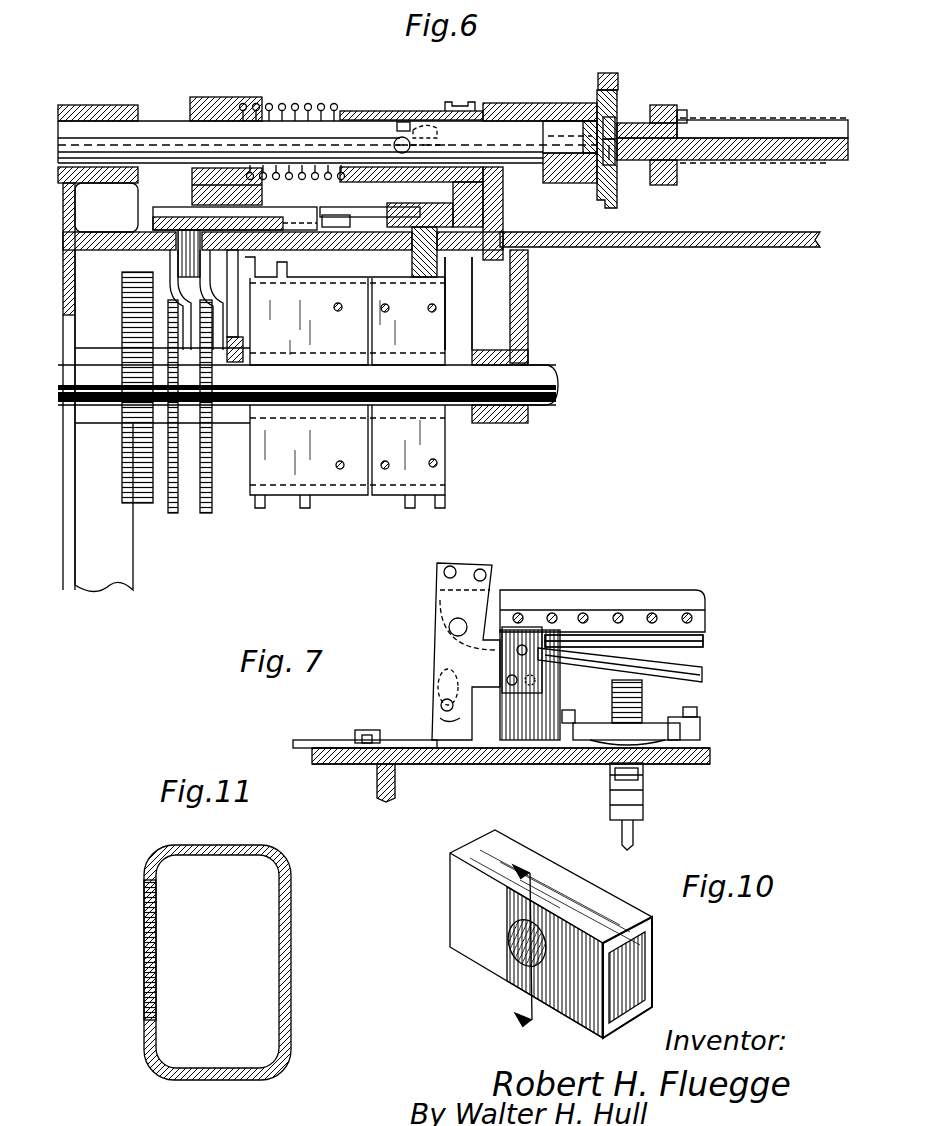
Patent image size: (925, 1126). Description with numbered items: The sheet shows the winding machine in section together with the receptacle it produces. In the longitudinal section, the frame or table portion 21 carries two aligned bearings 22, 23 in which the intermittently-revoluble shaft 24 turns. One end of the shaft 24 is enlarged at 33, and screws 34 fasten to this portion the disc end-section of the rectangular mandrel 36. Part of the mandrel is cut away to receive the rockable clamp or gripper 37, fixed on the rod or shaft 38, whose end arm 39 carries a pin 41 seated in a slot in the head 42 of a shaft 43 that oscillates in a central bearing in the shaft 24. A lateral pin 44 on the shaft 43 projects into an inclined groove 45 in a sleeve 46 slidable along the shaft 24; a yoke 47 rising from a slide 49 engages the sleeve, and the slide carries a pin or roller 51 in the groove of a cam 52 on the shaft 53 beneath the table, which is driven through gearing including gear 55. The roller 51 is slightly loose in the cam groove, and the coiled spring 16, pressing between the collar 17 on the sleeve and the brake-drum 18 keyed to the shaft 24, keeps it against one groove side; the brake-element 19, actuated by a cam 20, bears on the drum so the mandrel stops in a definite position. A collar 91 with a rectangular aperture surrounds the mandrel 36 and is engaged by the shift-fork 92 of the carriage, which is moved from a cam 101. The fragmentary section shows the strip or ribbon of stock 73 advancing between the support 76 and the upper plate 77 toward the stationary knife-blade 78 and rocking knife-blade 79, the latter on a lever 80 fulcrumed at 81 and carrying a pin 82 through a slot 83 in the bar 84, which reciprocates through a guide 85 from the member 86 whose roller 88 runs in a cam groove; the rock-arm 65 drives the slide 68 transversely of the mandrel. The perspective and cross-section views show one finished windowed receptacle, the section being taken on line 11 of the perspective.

In FIG. 6, the bearing 22 is at (107, 105).
In FIG. 6, the shaft 24 is at (160, 130).
In FIG. 6, the brake-drum 18 is at (215, 100).
In FIG. 6, the coiled spring 16 is at (300, 104).
In FIG. 6, the collar 17 is at (355, 111).
In FIG. 6, the lateral pin 44 is at (400, 137).
In FIG. 6, the inclined groove 45 is at (422, 126).
In FIG. 6, the yoke 47 is at (468, 104).
In FIG. 6, the bearing 23 is at (517, 108).
In FIG. 6, the shaft 43 is at (553, 125).
In FIG. 6, the head 42 is at (590, 118).
In FIG. 6, the enlarged portion 33 is at (603, 200).
In FIG. 6, the pin 39 is at (606, 150).
In FIG. 6, the pin 41 is at (607, 165).
In FIG. 6, the screw 34 is at (618, 80).
In FIG. 6, the rod or shaft 38 is at (636, 122).
In FIG. 6, the shift-fork 92 is at (663, 105).
In FIG. 6, the collar 91 is at (682, 116).
In FIG. 6, the clamp or gripper 37 is at (775, 120).
In FIG. 6, the mandrel 36 is at (775, 160).
In FIG. 6, the frame or table portion 21 is at (680, 236).
In FIG. 7, the frame or table portion 21 is at (488, 764).
In FIG. 6, the brake-element 19 is at (215, 168).
In FIG. 6, the reciprocating member 86 is at (172, 212).
In FIG. 6, the bar 84 is at (330, 215).
In FIG. 7, the bar 84 is at (322, 742).
In FIG. 6, the sleeve 46 is at (453, 190).
In FIG. 6, the slide 49 is at (390, 208).
In FIG. 6, the roller 88 is at (170, 260).
In FIG. 6, the cam 101 is at (288, 264).
In FIG. 6, the pin or roller 51 is at (437, 258).
In FIG. 6, the cam 52 is at (446, 284).
In FIG. 6, the cam 20 is at (245, 370).
In FIG. 6, the shaft 53 is at (543, 372).
In FIG. 6, the gear 55 is at (122, 450).
In FIG. 7, the lever 80 is at (466, 651).
In FIG. 7, the fulcrum 81 is at (448, 628).
In FIG. 7, the slot 83 is at (440, 690).
In FIG. 7, the pin 82 is at (441, 708).
In FIG. 7, the guide 85 is at (367, 730).
In FIG. 7, the upper plate 77 is at (565, 612).
In FIG. 7, the stationary knife-blade 78 is at (603, 612).
In FIG. 7, the strip or ribbon of stock 73 is at (632, 636).
In FIG. 7, the support 76 is at (665, 640).
In FIG. 7, the rocking knife-blade 79 is at (702, 665).
In FIG. 7, the slide 68 is at (593, 728).
In FIG. 7, the rock-arm 65 is at (622, 838).
In FIG. 10, the section line 11 is at (528, 955).